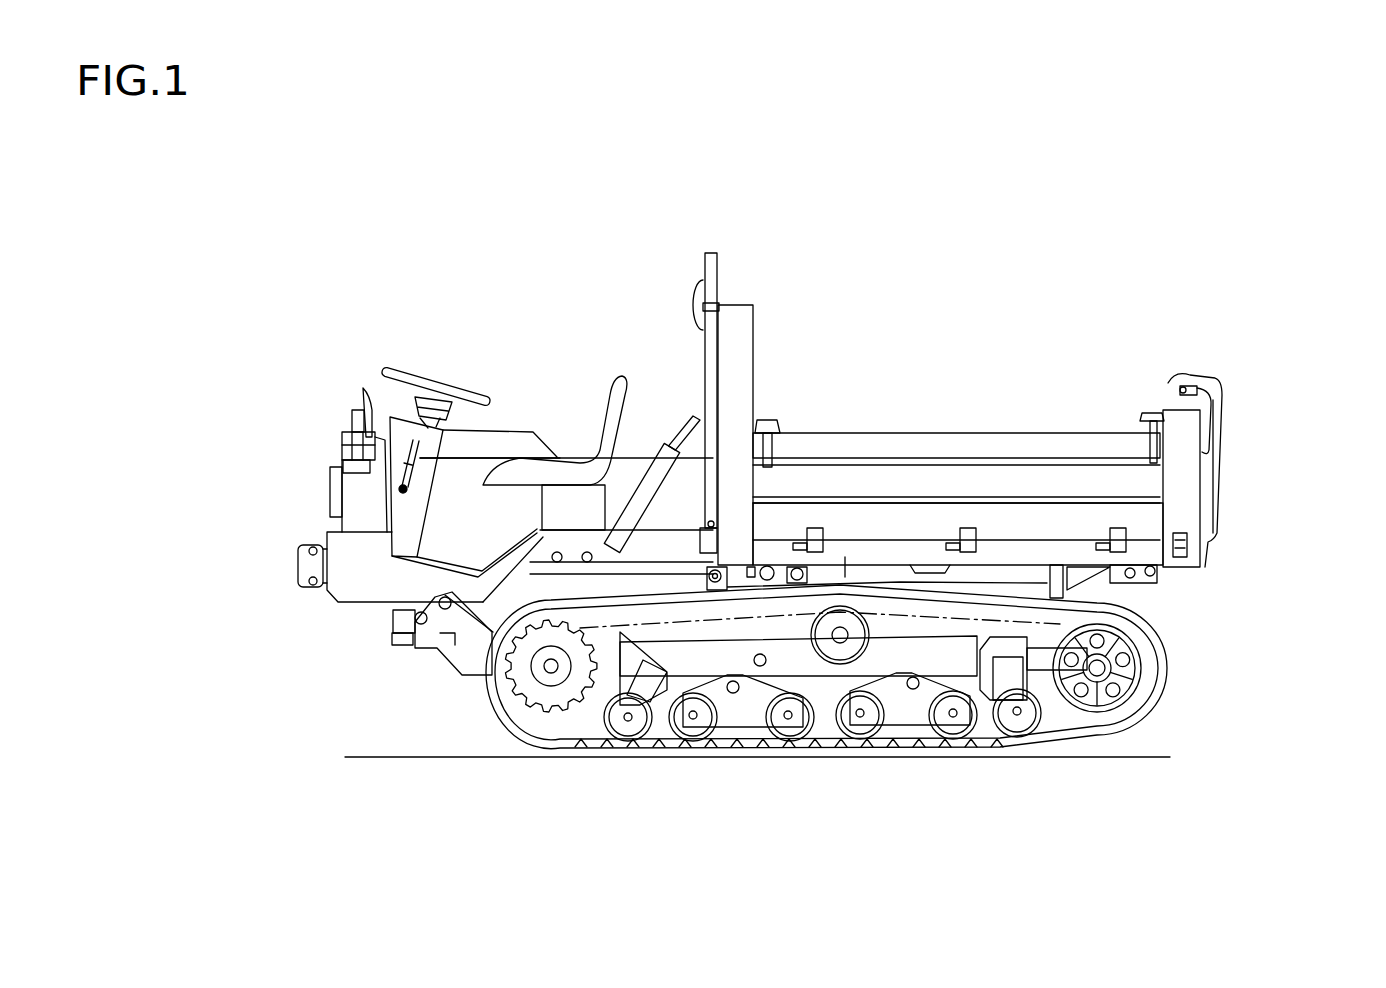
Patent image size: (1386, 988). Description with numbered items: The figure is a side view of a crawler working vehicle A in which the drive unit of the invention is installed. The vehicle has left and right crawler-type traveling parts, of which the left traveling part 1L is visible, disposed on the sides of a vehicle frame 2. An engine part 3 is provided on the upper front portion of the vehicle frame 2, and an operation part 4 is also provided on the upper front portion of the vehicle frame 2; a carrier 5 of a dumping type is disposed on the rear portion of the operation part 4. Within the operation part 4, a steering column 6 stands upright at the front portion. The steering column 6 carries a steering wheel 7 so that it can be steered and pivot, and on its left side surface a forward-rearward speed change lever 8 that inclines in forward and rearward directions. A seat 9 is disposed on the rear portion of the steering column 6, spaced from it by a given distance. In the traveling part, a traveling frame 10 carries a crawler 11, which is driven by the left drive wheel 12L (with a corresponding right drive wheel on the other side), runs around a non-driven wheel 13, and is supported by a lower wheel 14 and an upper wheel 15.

The crawler working vehicle A is at (996, 253).
The left traveling part 1L is at (1190, 680).
The vehicle frame 2 is at (437, 667).
The engine part 3 is at (364, 636).
The operation part 4 is at (551, 351).
The carrier 5 is at (1037, 432).
The steering column 6 is at (392, 420).
The steering wheel 7 is at (432, 382).
The forward-rearward speed change lever 8 is at (467, 455).
The seat 9 is at (628, 390).
The traveling frame 10 is at (818, 683).
The crawler 11 is at (478, 738).
The left drive wheel 12L is at (577, 703).
The non-driven wheel 13 is at (1053, 710).
The lower wheel 14 is at (862, 672).
The upper wheel 15 is at (873, 650).